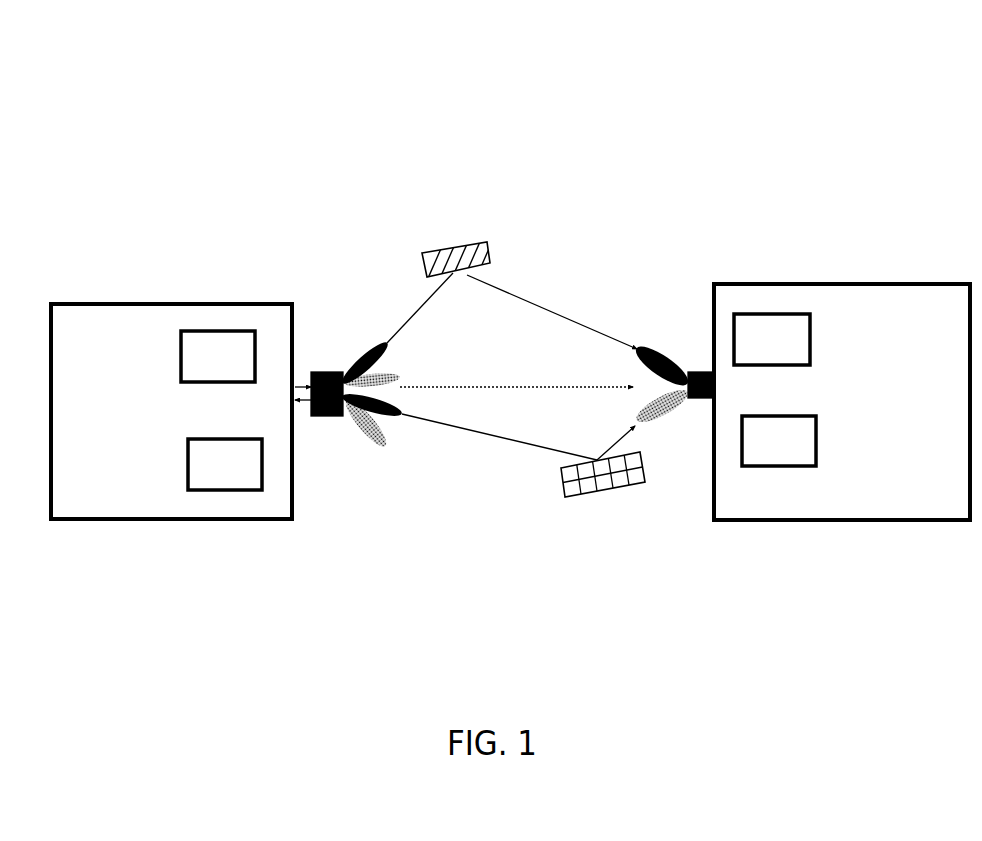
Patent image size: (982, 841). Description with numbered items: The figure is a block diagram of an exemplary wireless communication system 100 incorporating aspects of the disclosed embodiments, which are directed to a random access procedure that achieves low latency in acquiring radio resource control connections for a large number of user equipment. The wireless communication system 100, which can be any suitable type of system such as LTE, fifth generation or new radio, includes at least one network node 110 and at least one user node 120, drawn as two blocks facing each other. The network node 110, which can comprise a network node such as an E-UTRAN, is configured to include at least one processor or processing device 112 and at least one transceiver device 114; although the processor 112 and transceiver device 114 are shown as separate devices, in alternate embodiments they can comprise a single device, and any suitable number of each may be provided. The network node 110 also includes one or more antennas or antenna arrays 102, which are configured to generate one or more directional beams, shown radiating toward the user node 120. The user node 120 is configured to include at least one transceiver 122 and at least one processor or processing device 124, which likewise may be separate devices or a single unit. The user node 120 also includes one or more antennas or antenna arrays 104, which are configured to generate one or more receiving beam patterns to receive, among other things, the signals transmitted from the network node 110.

The wireless communication system 100 is at (632, 125).
The antenna array 102 is at (348, 343).
The antenna array 104 is at (668, 333).
The network node 110 is at (140, 302).
The processor 112 is at (218, 356).
The transceiver device 114 is at (225, 464).
The user node 120 is at (807, 282).
The transceiver 122 is at (772, 339).
The processor 124 is at (779, 441).